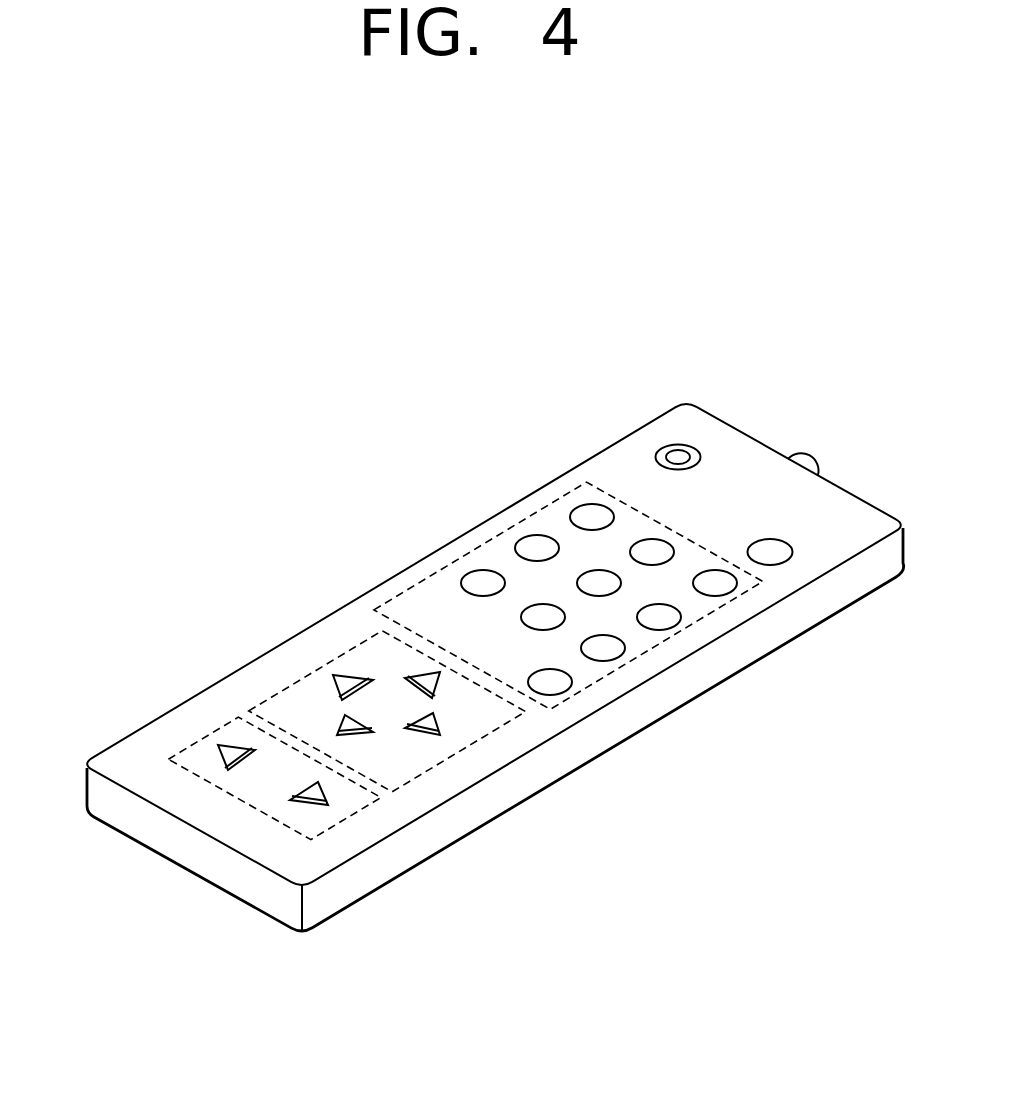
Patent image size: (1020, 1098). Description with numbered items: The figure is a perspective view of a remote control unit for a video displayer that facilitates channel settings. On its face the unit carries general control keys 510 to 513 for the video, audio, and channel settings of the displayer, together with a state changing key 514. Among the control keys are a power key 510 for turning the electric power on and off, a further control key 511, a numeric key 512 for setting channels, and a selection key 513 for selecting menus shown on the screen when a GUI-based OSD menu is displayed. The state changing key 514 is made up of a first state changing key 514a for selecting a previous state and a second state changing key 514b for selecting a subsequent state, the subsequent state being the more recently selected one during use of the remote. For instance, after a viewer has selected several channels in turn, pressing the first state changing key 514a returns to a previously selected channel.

The power key 510 is at (677, 457).
The control key 511 is at (773, 552).
The numeric key 512 is at (632, 662).
The selection key 513 is at (462, 748).
The state changing key 514 is at (269, 836).
The first state changing key 514a is at (220, 755).
The second state changing key 514b is at (290, 803).